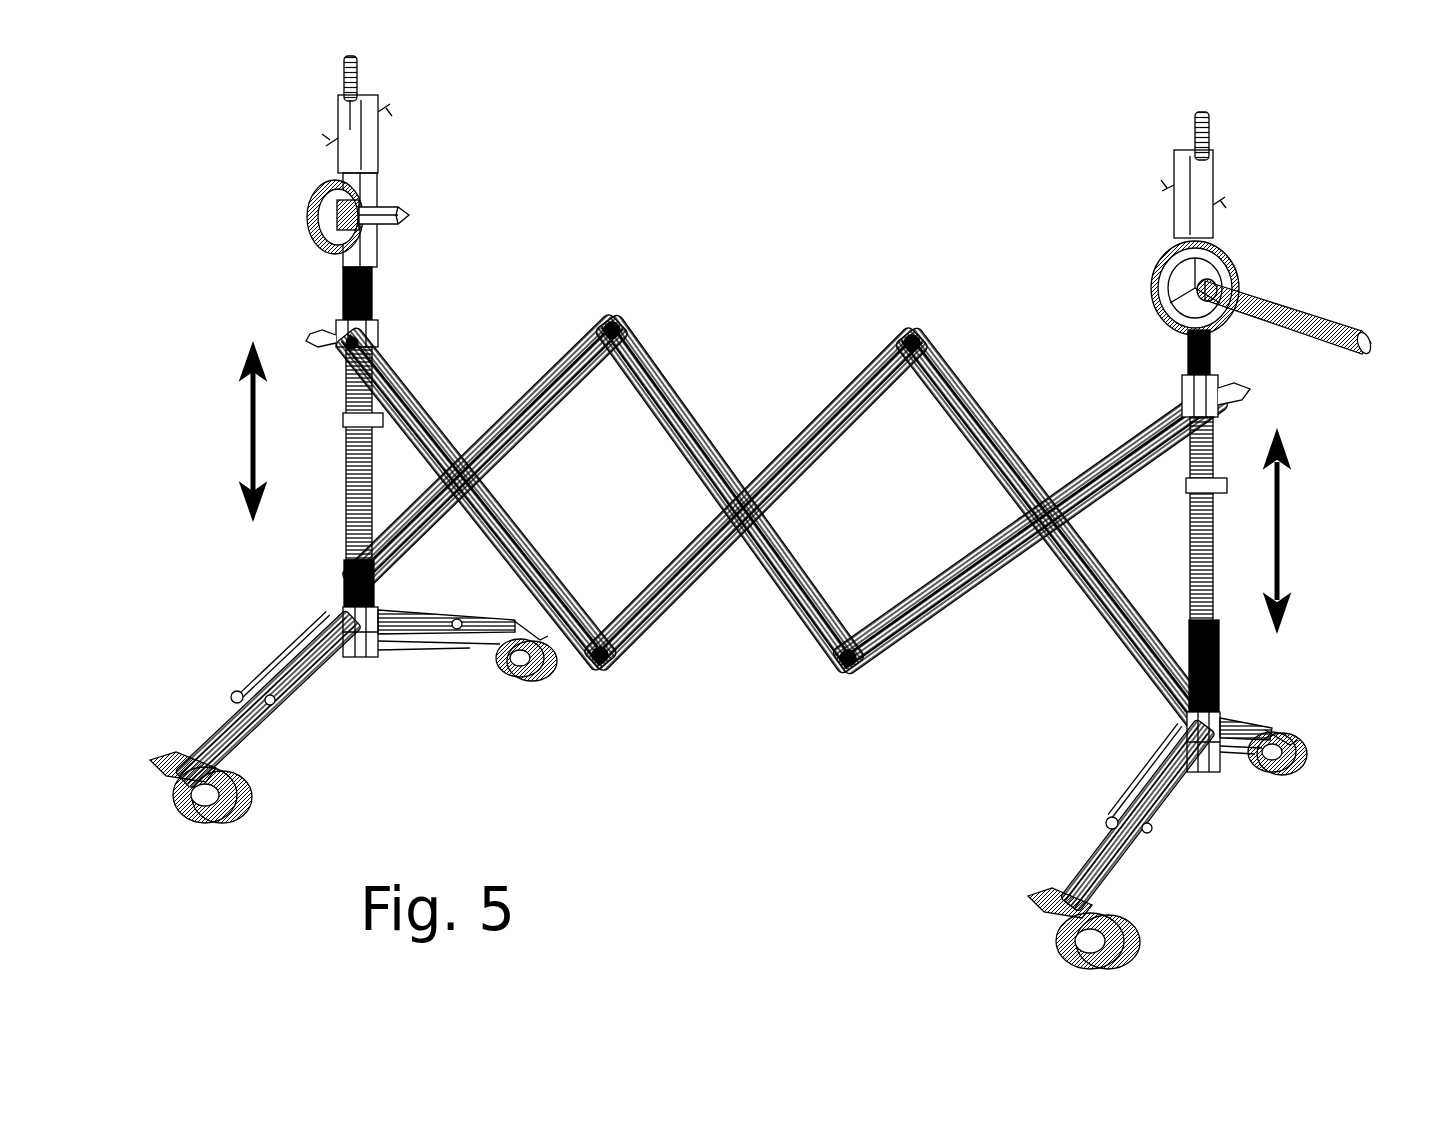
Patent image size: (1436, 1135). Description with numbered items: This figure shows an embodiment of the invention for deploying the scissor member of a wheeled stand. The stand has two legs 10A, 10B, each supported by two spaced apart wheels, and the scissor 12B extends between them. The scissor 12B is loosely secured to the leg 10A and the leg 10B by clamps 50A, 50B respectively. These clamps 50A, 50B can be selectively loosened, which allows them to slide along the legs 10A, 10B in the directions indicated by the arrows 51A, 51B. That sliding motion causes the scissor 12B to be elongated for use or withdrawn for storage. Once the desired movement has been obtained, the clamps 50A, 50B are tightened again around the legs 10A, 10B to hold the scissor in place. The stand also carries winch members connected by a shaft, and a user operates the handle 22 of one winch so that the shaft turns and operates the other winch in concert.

The leg 10A is at (347, 439).
The leg 10B is at (1227, 540).
The scissor 12B is at (735, 650).
The handle 22 is at (1262, 262).
The clamp 50A is at (290, 322).
The clamp 50B is at (1272, 398).
The arrow 51A is at (214, 431).
The arrow 51B is at (1315, 531).